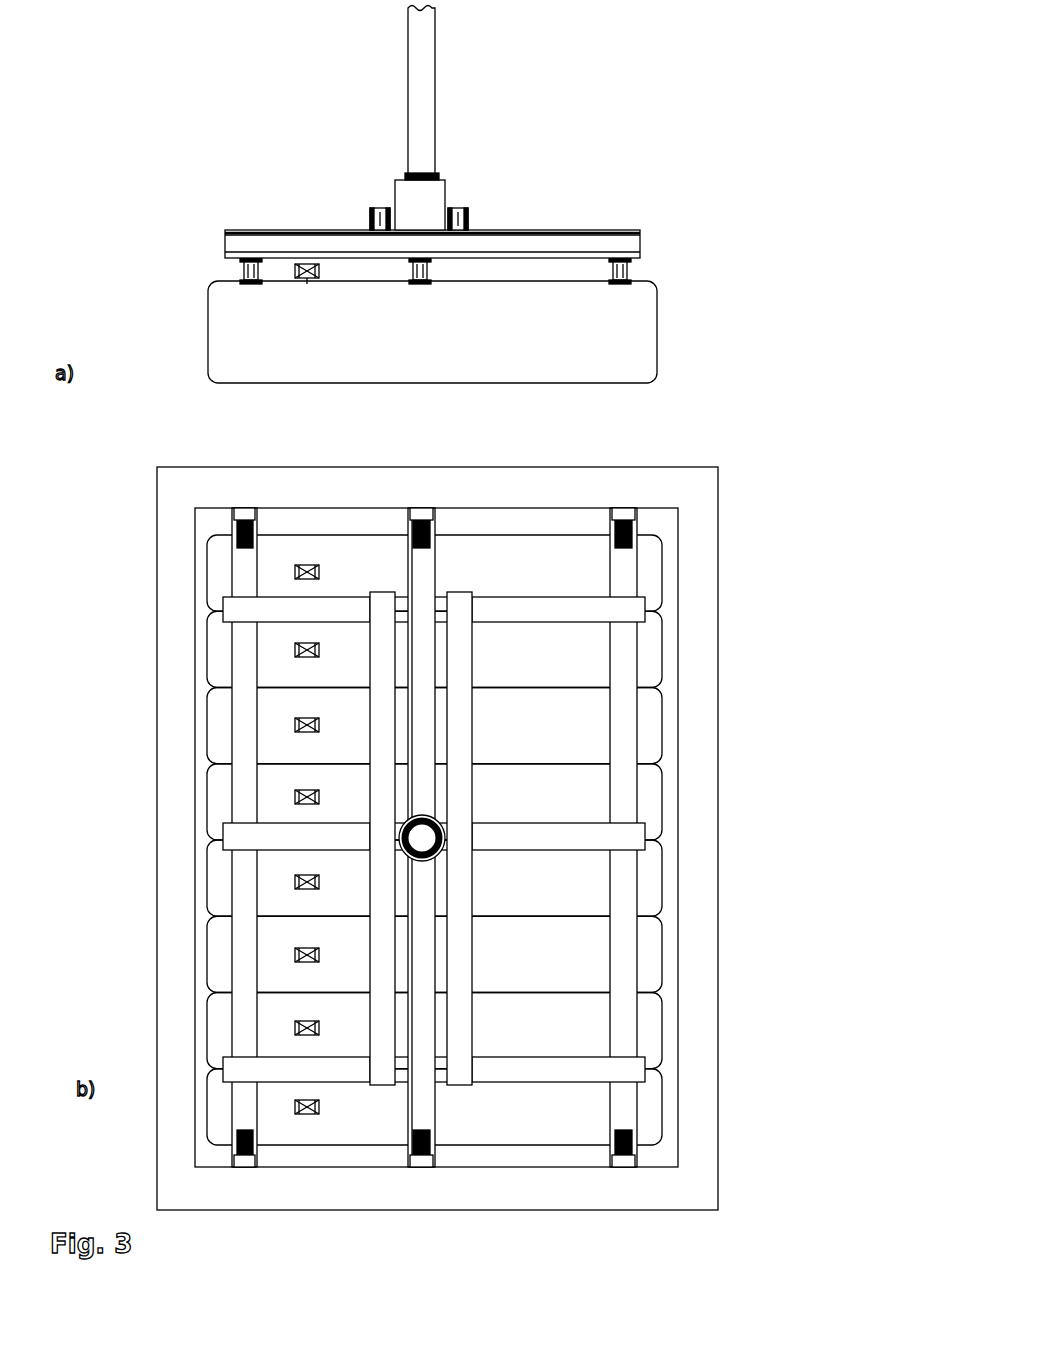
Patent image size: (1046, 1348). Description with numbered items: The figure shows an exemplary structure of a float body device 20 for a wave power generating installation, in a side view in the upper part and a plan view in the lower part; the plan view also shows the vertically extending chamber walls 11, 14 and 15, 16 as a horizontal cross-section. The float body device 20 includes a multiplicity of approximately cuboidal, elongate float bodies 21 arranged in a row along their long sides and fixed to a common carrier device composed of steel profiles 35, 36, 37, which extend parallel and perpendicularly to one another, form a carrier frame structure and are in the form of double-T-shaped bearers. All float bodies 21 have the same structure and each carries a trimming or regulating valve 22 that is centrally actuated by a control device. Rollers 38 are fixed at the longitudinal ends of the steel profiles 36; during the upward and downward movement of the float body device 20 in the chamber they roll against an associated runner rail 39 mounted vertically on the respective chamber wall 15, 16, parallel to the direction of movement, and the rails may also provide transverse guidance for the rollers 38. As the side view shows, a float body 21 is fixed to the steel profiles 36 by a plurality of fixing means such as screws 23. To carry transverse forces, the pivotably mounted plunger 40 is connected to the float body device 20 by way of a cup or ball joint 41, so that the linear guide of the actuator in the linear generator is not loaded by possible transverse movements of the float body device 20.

The chamber wall 11 is at (702, 690).
The chamber wall 14 is at (170, 535).
The chamber wall 15 is at (468, 483).
The chamber wall 16 is at (545, 1193).
The float body device 20 is at (363, 517).
The float body 21 is at (535, 358).
The trimming or regulating valve 22 is at (300, 262).
The screw 23 is at (613, 283).
The steel profile 35 is at (610, 228).
The steel profile 36 is at (534, 200).
The steel profile 37 is at (376, 200).
The roller 38 is at (640, 520).
The runner rail 39 is at (625, 505).
The plunger 40 is at (418, 40).
The cup or ball joint 41 is at (425, 190).